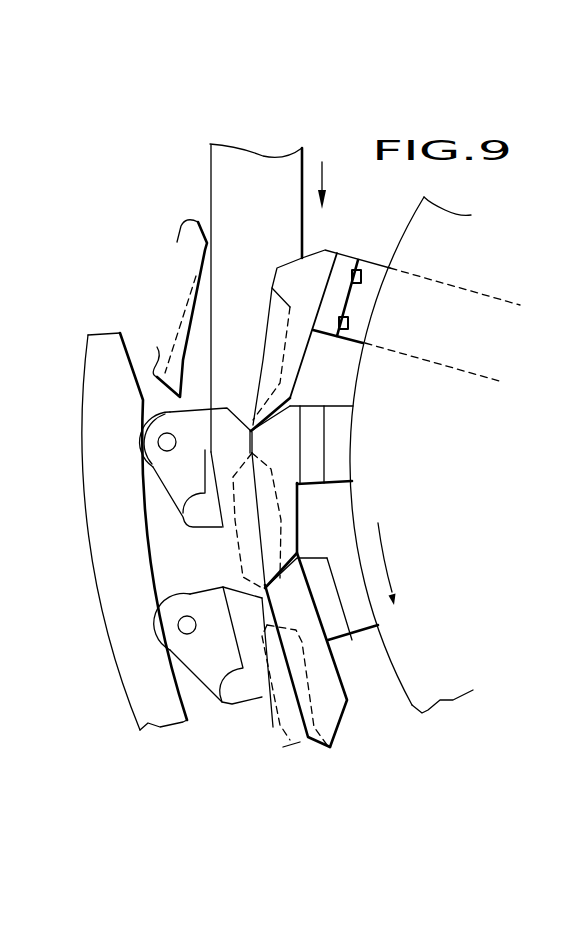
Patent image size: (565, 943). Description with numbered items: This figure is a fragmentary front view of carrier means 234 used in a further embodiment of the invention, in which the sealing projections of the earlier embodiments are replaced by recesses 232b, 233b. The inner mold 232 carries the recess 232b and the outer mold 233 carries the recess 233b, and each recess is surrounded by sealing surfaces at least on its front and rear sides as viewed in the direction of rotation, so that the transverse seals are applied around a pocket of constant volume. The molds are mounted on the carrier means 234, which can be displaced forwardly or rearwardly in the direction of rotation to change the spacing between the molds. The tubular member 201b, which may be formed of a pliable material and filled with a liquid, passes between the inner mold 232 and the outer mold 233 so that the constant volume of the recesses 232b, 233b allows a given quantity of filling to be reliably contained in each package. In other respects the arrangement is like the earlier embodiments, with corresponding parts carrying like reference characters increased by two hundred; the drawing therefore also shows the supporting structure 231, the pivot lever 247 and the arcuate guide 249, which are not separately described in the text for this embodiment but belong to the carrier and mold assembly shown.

The tubular member 201b is at (236, 188).
The outer mold 233 is at (198, 222).
The recess of outer mold 233b is at (243, 527).
The carrier means 234 is at (333, 243).
The inner mold 232 is at (307, 360).
The recess of inner mold 232b is at (271, 500).
The arcuate carrier 231 is at (417, 707).
The pivot lever 247 is at (143, 450).
The arcuate guide rail 249 is at (98, 568).